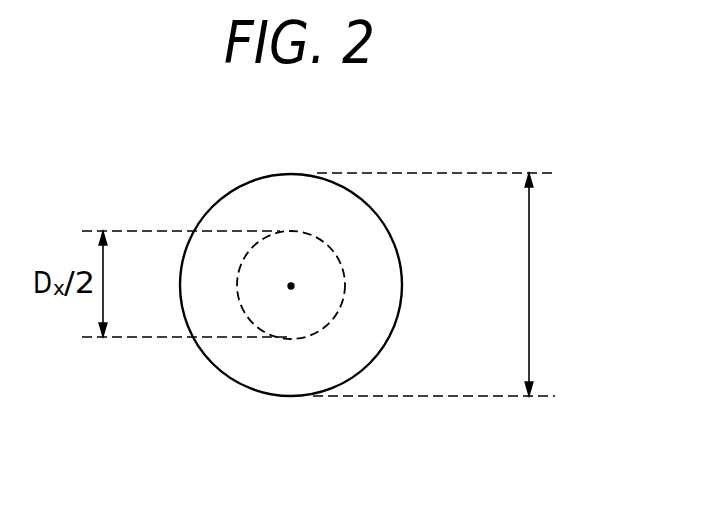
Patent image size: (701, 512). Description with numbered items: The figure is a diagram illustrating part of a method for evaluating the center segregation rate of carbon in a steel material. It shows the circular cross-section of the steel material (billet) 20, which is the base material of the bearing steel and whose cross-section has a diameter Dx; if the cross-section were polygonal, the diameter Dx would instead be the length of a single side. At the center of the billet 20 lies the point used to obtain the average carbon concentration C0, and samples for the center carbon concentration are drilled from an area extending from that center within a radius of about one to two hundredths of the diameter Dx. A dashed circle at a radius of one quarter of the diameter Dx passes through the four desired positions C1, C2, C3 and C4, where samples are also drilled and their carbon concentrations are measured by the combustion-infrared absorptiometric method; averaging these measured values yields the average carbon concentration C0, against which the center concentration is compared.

The steel material (billet) 20 is at (262, 193).
The average concentration of carbon C0 is at (293, 270).
The carbon concentration measuring position C1 is at (293, 210).
The carbon concentration measuring position C2 is at (217, 288).
The carbon concentration measuring position C3 is at (290, 360).
The carbon concentration measuring position C4 is at (364, 288).
The diameter of the cross-section Dx is at (440, 284).